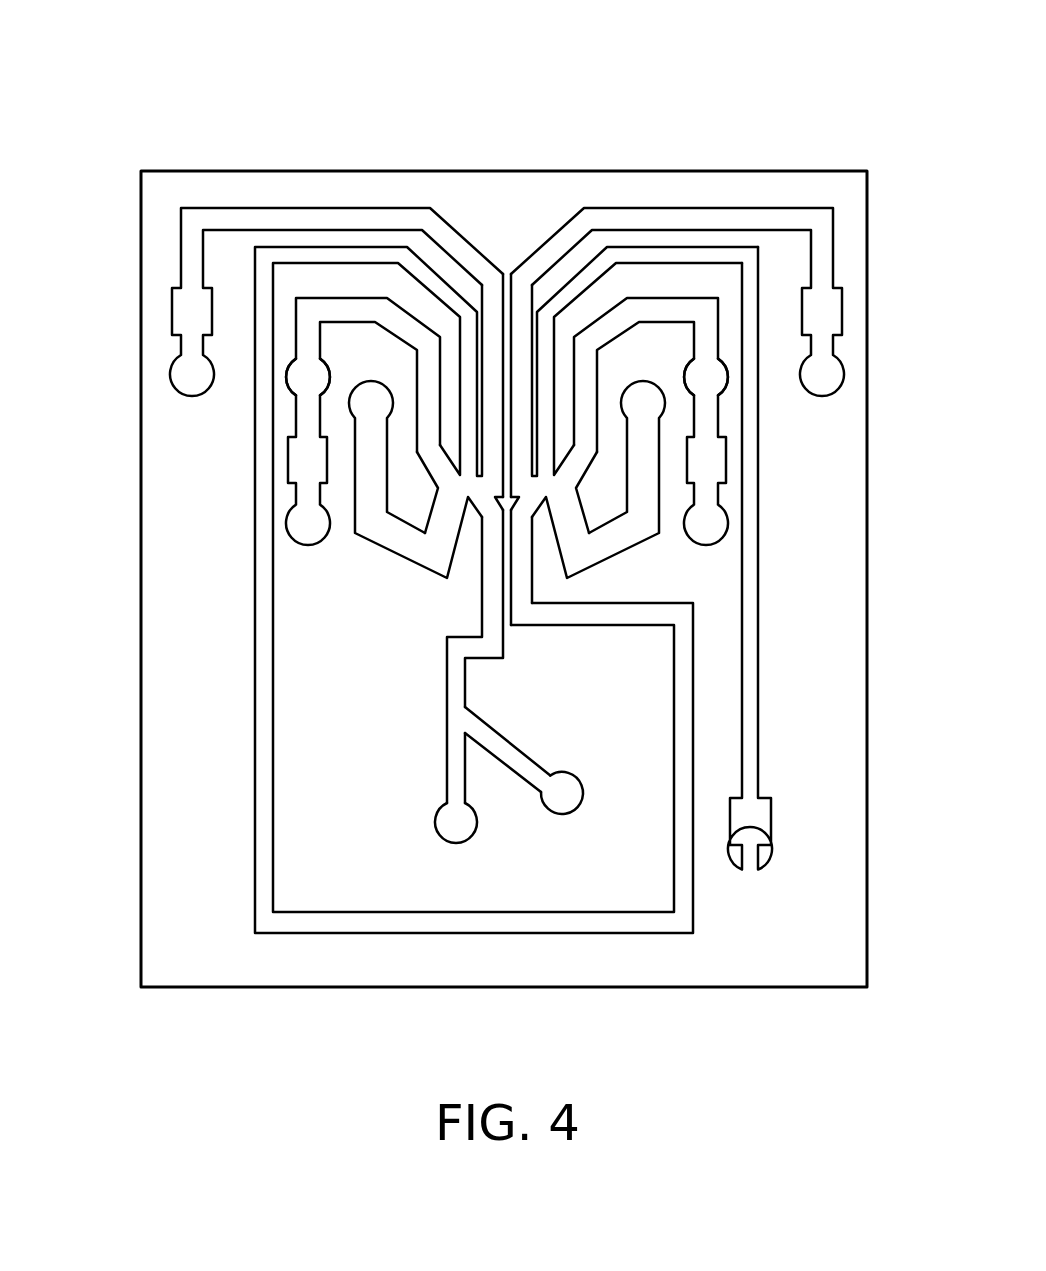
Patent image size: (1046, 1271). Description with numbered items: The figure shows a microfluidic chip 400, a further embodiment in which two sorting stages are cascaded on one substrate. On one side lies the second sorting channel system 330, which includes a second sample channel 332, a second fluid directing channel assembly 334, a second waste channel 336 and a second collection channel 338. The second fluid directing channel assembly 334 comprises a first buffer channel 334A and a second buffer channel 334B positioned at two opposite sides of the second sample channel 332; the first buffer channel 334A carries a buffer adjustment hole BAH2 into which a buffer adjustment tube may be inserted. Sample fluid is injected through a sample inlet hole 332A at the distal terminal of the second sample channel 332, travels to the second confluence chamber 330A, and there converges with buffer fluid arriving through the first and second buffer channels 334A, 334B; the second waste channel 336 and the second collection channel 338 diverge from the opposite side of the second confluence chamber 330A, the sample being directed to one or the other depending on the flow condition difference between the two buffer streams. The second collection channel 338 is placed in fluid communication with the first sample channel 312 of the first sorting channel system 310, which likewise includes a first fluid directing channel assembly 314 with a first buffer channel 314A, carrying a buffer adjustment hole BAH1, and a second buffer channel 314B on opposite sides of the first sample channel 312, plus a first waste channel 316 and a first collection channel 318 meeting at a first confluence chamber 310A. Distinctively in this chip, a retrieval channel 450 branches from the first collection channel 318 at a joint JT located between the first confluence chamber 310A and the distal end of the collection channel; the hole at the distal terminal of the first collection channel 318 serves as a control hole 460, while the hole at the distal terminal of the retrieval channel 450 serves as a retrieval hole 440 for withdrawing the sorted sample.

The microfluidic chip 400 is at (868, 951).
The first sorting channel system 310 is at (525, 63).
The first fluid directing channel assembly 314 is at (373, 107).
The first buffer channel 314A is at (316, 298).
The second buffer channel 314B is at (360, 207).
The first sample channel 312 is at (398, 246).
The first waste channel 316 is at (387, 443).
The first collection channel 318 is at (482, 557).
The second sorting channel system 330 is at (822, 63).
The second fluid directing channel assembly 334 is at (862, 107).
The first buffer channel 334A is at (690, 298).
The second buffer channel 334B is at (797, 207).
The second collection channel 338 is at (532, 553).
The second waste channel 336 is at (659, 437).
The second sample channel 332 is at (680, 262).
The sample inlet hole 332A is at (785, 894).
The first confluence chamber 310A is at (425, 494).
The second confluence chamber 330A is at (589, 496).
The buffer adjustment hole BAH1 is at (290, 349).
The buffer adjustment hole BAH2 is at (734, 358).
The junction JT is at (523, 780).
The retrieval hole 440 is at (485, 751).
The retrieval channel 450 is at (580, 825).
The control hole 460 is at (468, 855).